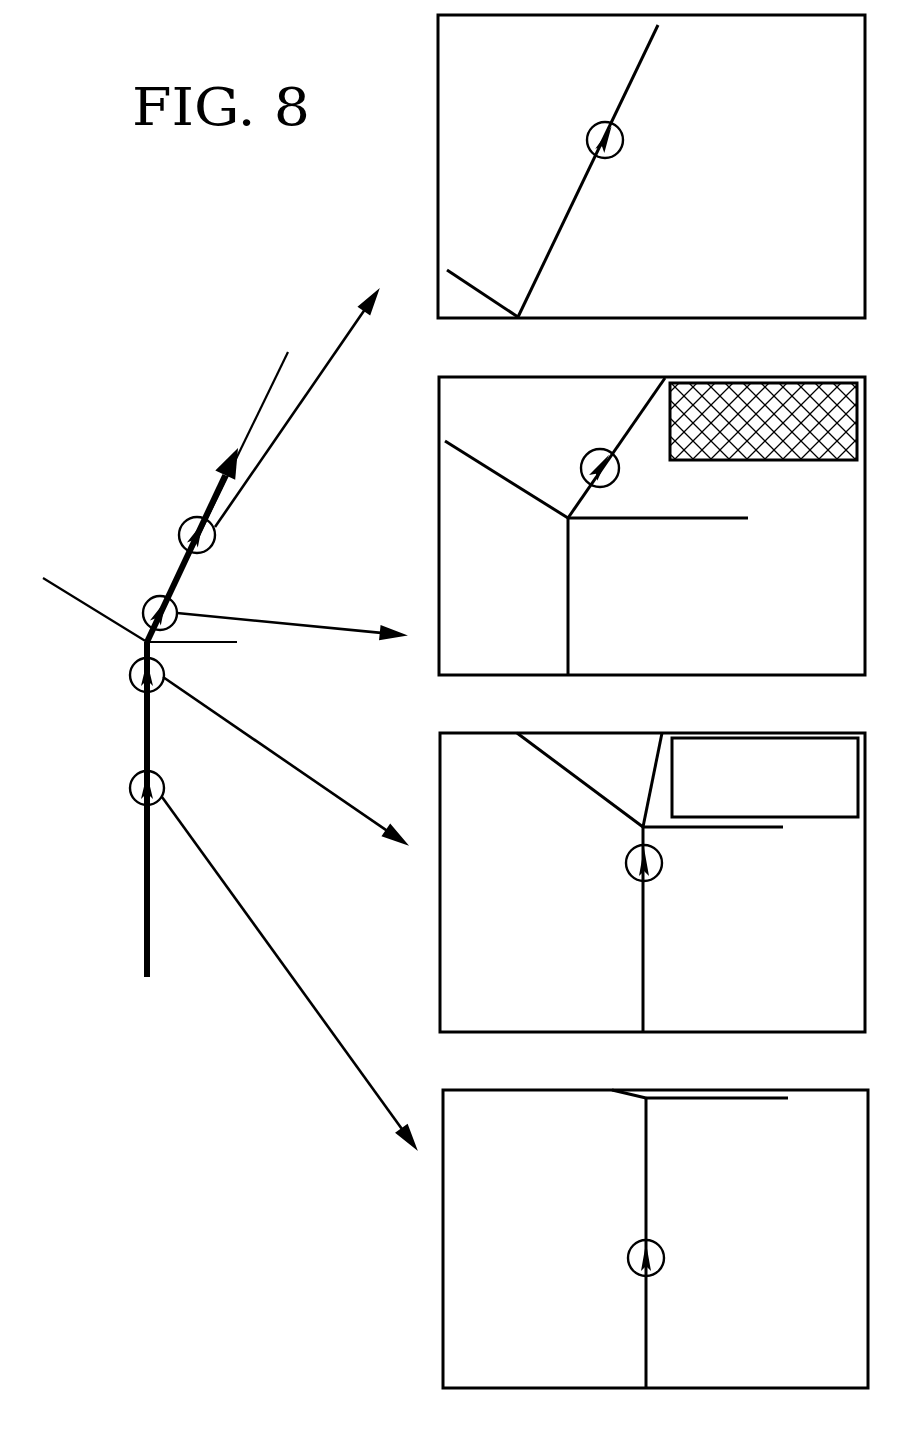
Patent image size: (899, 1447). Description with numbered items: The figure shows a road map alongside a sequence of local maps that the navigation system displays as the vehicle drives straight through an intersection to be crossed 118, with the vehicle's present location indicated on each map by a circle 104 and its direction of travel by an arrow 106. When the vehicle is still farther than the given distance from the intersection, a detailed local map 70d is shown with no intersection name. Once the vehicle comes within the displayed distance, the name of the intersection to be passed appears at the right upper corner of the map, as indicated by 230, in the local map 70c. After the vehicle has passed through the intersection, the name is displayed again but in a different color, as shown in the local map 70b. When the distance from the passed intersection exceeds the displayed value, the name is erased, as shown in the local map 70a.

The local map 70a is at (416, 199).
The local map 70b is at (407, 563).
The local map 70c is at (414, 940).
The detailed local map 70d is at (414, 1253).
The intersection to be crossed 118 is at (145, 644).
The name of the intersection to be crossed 230 is at (727, 460).
The circle 104 is at (628, 1258).
The arrow 106 is at (664, 1258).